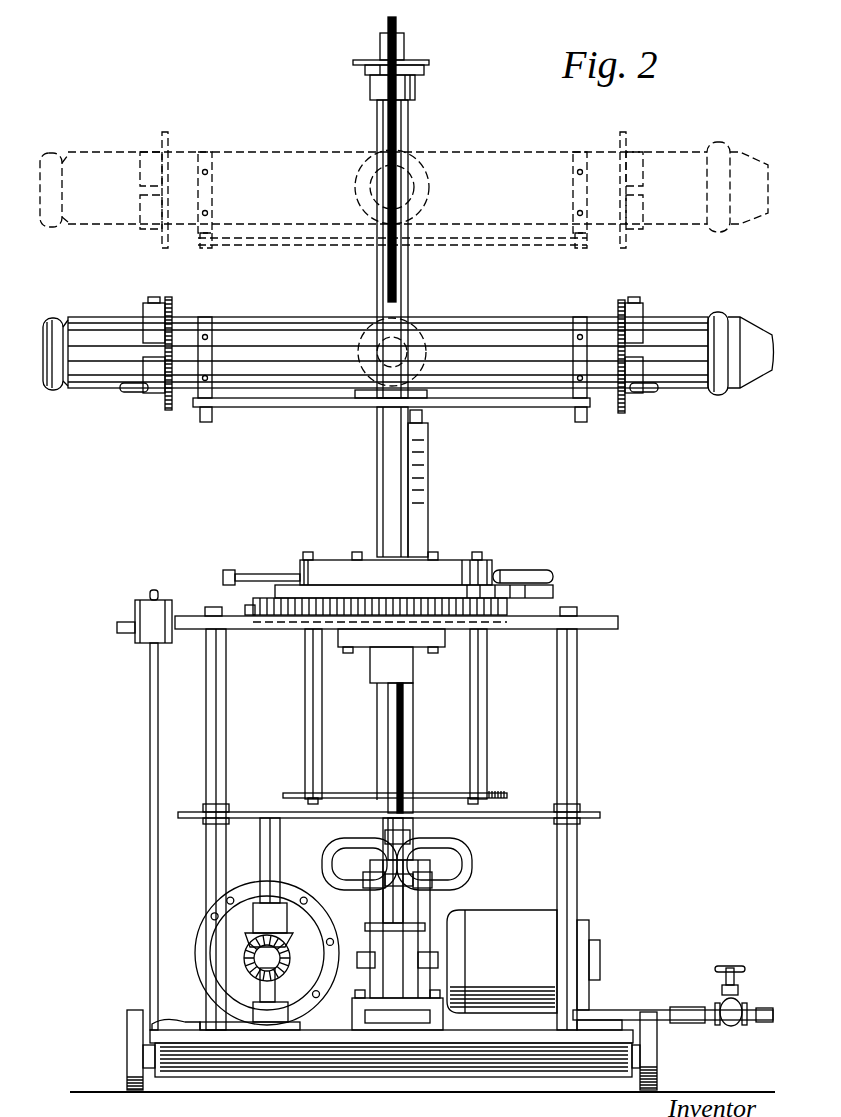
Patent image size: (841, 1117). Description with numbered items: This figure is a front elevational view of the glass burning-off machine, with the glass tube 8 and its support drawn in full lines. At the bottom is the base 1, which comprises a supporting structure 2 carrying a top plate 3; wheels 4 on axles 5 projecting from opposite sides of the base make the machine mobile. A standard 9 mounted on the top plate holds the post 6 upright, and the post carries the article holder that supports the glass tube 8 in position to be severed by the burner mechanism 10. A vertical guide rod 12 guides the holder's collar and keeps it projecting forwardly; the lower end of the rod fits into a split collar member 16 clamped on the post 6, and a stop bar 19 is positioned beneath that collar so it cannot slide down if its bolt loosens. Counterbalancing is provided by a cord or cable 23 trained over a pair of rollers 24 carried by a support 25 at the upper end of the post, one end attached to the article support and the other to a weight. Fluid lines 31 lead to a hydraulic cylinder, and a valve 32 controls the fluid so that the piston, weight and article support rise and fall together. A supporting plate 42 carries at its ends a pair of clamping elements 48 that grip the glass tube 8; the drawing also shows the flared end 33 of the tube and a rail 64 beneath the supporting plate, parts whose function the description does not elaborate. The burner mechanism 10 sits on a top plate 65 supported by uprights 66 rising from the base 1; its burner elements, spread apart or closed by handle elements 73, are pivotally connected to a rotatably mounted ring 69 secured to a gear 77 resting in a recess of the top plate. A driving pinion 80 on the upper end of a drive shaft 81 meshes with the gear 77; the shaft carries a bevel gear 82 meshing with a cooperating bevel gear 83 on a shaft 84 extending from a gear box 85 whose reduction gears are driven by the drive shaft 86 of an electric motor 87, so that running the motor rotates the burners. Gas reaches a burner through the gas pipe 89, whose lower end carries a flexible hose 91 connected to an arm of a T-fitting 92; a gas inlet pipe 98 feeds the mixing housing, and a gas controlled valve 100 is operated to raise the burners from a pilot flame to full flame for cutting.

The base 1 is at (190, 1078).
The supporting structure 2 is at (530, 1070).
The top plate 3 is at (590, 1032).
The wheels 4 is at (128, 1012).
The axles 5 is at (150, 1090).
The post 6 is at (377, 480).
The glass tube 8 is at (85, 318).
The standard 9 is at (440, 900).
The burner mechanism 10 is at (378, 266).
The vertical guide rod 12 is at (380, 125).
The split collar member 16 is at (355, 400).
The stop bar 19 is at (428, 482).
The cord or cable 23 is at (370, 87).
The rollers 24 is at (388, 22).
The support 25 is at (380, 50).
The fluid lines 31 is at (150, 890).
The valve 32 is at (140, 605).
The barrel nozzle 33 is at (705, 317).
The supporting plate 42 is at (570, 400).
The clamping elements 48 is at (150, 305).
The rail 64 is at (205, 410).
The top plate 65 is at (615, 620).
The uprights 66 is at (577, 720).
The rotatably mounted ring 69 is at (275, 597).
The handle elements 73 is at (232, 568).
The gear 77 is at (500, 618).
The driving pinion 80 is at (253, 605).
The drive shaft 81 is at (248, 705).
The bevel gear 82 is at (260, 905).
The bevel gear 83 is at (250, 955).
The shaft 84 is at (215, 960).
The gear box 85 is at (283, 890).
The drive shaft 86 is at (438, 958).
The electric motor 87 is at (520, 912).
The gas pipe 89 is at (398, 765).
The flexible pipes or hoses 91 is at (465, 855).
The T-fitting 92 is at (420, 838).
The gas inlet pipe 98 is at (630, 1010).
The gas controlled valve 100 is at (730, 965).